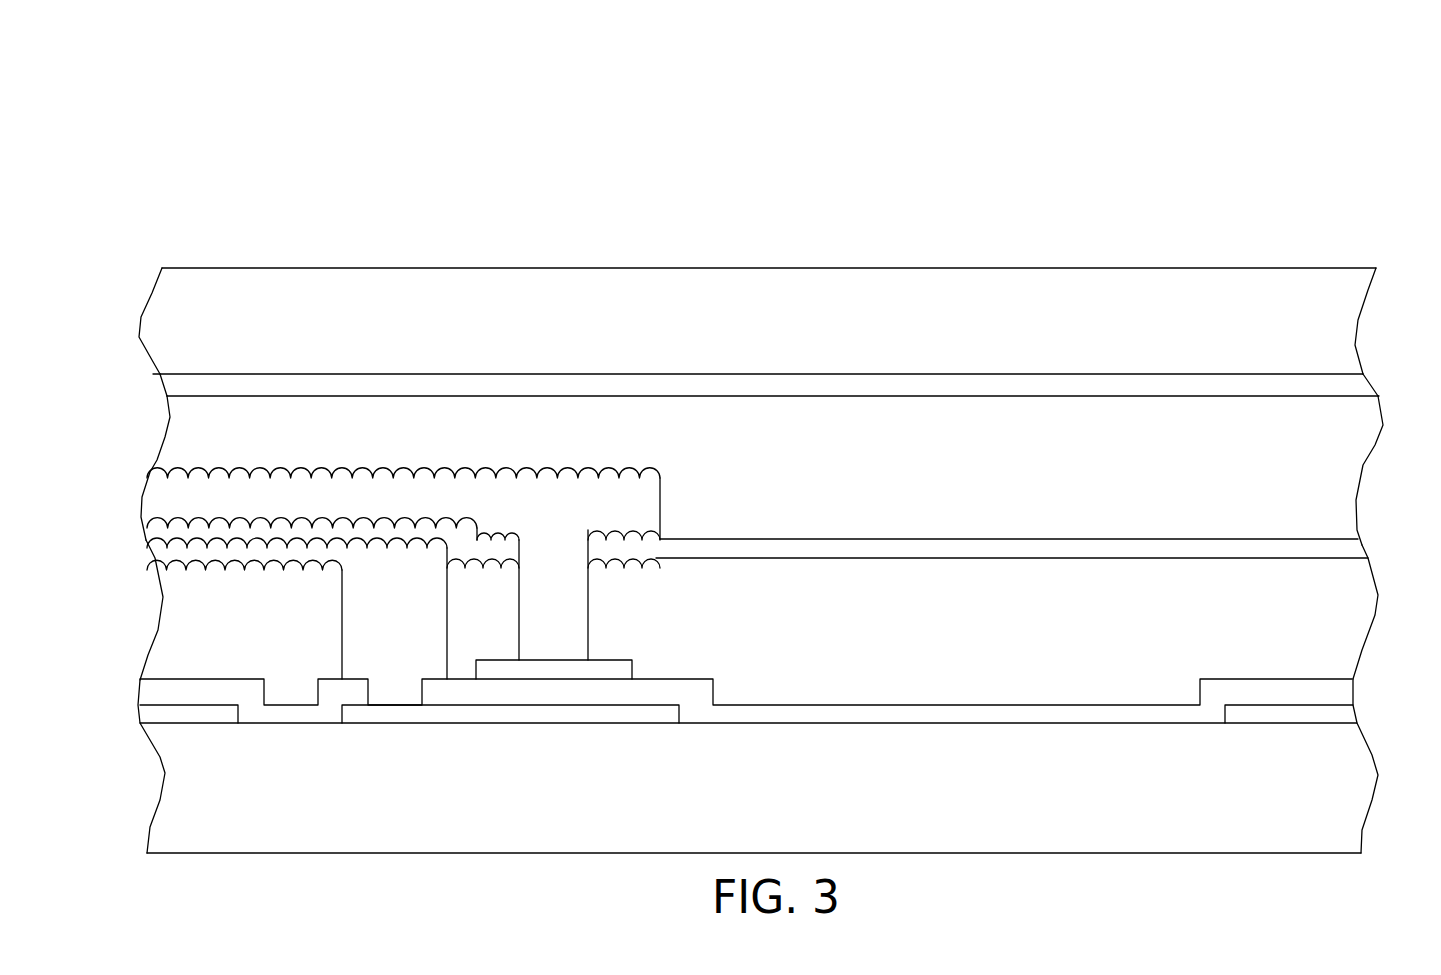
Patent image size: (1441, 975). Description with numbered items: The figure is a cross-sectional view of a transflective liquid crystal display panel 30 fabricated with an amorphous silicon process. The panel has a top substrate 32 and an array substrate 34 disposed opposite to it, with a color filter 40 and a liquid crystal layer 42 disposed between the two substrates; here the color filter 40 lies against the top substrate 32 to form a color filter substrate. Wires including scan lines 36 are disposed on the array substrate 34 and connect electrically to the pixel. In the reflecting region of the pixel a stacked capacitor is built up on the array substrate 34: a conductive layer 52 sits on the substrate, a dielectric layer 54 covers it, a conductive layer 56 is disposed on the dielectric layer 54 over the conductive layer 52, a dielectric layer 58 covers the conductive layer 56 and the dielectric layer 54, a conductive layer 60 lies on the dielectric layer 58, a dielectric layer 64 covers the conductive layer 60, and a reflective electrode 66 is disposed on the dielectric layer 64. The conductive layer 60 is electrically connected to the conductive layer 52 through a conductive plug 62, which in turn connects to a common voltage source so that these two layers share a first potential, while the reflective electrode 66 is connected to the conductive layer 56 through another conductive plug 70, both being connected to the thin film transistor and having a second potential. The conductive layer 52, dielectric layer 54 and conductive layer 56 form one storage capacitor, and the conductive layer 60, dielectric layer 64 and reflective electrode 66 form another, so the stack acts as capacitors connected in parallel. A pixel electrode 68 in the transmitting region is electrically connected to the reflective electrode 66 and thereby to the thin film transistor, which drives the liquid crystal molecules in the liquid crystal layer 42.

The transflective liquid crystal display panel 30 is at (1224, 128).
The top substrate 32 is at (1335, 330).
The array substrate 34 is at (1360, 782).
The scan lines 36 is at (208, 717).
The color filter 40 is at (1353, 389).
The liquid crystal layer 42 is at (1343, 470).
The conductive layer 52 is at (465, 716).
The dielectric layer 54 is at (167, 690).
The conductive layer 56 is at (555, 663).
The dielectric layer 58 is at (1355, 631).
The conductive layer 60 is at (165, 556).
The conductive plug 62 is at (410, 633).
The dielectric layer 64 is at (165, 529).
The reflective electrode 66 is at (165, 486).
The pixel electrode 68 is at (1343, 552).
The conductive plug 70 is at (570, 633).